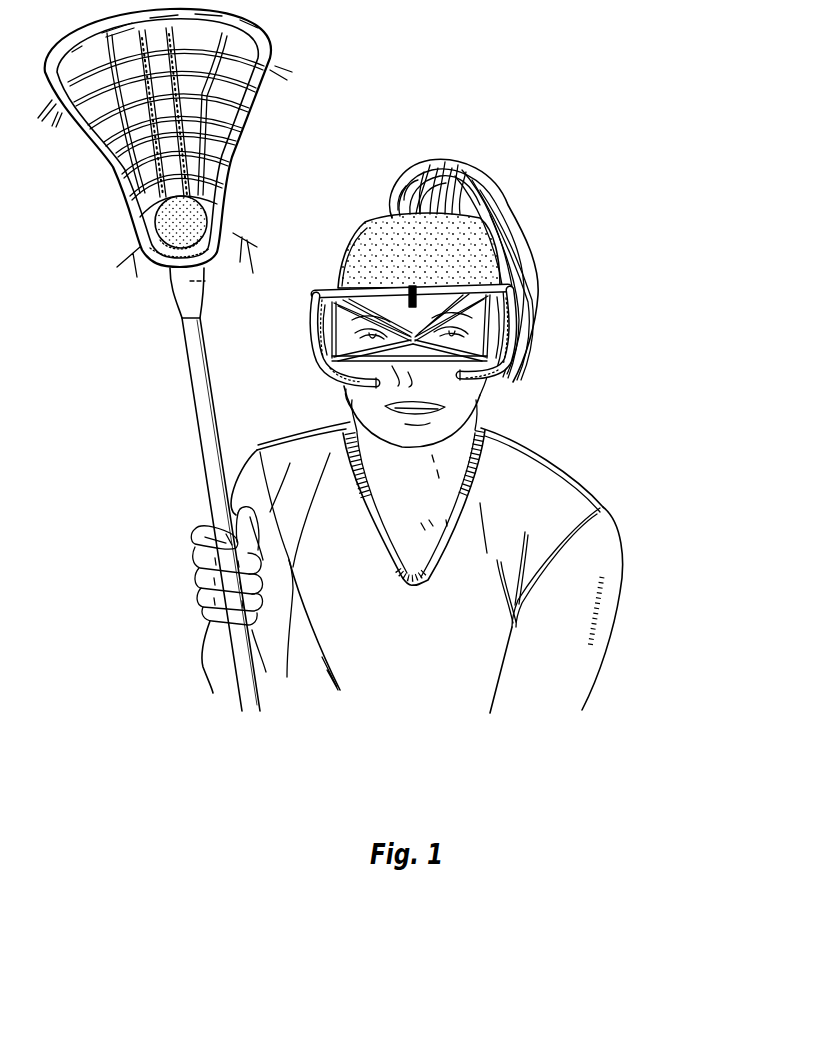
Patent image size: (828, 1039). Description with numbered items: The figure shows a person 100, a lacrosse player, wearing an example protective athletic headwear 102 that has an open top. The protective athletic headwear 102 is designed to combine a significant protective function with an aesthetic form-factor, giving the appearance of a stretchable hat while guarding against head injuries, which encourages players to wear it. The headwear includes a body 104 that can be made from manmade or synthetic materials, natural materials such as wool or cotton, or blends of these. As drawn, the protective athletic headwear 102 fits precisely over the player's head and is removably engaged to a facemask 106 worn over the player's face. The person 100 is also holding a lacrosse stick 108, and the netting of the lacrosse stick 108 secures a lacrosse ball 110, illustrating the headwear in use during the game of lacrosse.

The person 100 is at (459, 423).
The protective athletic headwear 102 is at (385, 272).
The body 104 is at (340, 262).
The facemask 106 is at (322, 360).
The lacrosse stick 108 is at (277, 56).
The lacrosse ball 110 is at (178, 227).